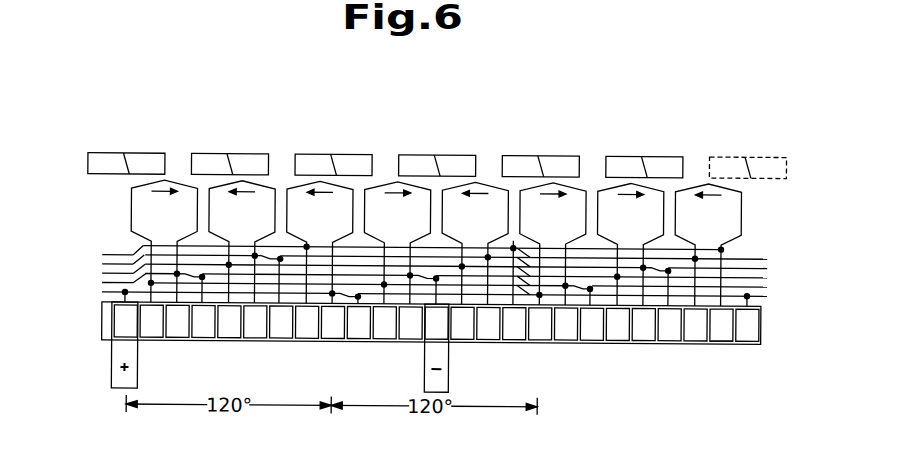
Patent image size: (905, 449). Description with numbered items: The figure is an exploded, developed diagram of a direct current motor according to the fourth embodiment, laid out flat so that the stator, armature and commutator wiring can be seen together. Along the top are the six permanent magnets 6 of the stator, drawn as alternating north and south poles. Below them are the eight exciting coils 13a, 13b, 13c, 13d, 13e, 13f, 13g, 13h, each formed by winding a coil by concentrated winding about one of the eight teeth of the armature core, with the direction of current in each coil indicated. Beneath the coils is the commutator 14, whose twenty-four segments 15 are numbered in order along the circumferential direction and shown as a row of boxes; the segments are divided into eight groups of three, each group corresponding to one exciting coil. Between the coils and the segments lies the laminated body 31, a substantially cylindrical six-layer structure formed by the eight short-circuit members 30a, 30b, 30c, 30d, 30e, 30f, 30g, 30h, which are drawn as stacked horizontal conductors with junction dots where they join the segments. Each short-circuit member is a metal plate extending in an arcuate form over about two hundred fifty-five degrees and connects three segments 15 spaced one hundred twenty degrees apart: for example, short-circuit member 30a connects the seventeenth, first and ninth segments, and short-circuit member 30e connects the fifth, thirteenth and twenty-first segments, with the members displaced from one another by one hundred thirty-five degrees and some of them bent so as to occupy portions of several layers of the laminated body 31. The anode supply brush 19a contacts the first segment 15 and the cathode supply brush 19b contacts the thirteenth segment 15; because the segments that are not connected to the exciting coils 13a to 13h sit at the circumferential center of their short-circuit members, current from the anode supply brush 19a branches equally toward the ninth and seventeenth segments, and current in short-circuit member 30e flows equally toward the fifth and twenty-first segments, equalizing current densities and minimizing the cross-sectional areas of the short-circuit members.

The permanent magnet 6 is at (200, 153).
The first exciting coil 13a is at (179, 223).
The second exciting coil 13b is at (226, 223).
The third exciting coil 13c is at (304, 223).
The fourth exciting coil 13d is at (382, 223).
The fifth exciting coil 13e is at (490, 223).
The sixth exciting coil 13f is at (537, 223).
The seventh exciting coil 13g is at (615, 223).
The eighth exciting coil 13h is at (723, 223).
The laminated body 31 is at (97, 242).
The commutator 14 is at (762, 328).
The segment 15 is at (722, 342).
The anode supply brush 19a is at (112, 382).
The cathode supply brush 19b is at (449, 384).
The short-circuit member 30a is at (143, 294).
The short-circuit member 30b is at (361, 298).
The short-circuit member 30c is at (598, 289).
The short-circuit member 30d is at (212, 278).
The short-circuit member 30e is at (454, 279).
The short-circuit member 30f is at (672, 270).
The short-circuit member 30g is at (292, 260).
The short-circuit member 30h is at (514, 250).